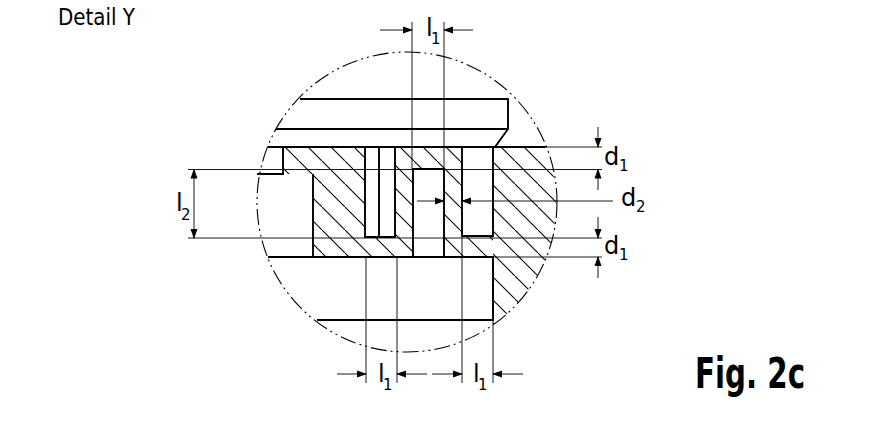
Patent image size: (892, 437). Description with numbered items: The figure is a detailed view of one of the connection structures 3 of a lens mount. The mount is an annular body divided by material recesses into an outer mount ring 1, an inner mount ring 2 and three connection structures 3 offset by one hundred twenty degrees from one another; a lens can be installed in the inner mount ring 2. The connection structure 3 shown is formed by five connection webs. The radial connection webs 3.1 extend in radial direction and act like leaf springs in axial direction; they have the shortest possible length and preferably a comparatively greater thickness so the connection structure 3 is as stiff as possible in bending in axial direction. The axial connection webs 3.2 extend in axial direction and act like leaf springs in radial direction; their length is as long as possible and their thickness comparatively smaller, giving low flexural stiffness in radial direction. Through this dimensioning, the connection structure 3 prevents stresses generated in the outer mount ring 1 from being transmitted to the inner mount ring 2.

The outer mount ring 1 is at (528, 157).
The inner mount ring 2 is at (335, 208).
The connection structure 3 is at (487, 112).
The radial connection web 3.1 is at (427, 156).
The axial connection web 3.2 is at (458, 208).